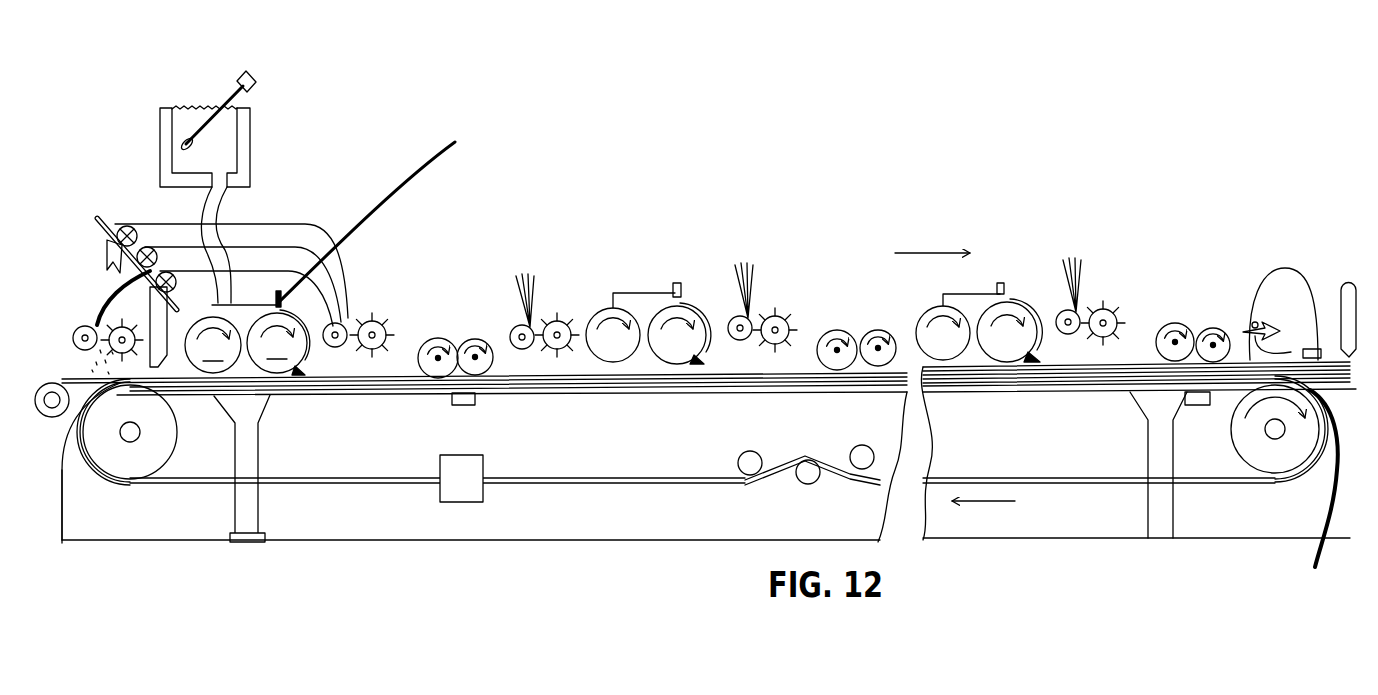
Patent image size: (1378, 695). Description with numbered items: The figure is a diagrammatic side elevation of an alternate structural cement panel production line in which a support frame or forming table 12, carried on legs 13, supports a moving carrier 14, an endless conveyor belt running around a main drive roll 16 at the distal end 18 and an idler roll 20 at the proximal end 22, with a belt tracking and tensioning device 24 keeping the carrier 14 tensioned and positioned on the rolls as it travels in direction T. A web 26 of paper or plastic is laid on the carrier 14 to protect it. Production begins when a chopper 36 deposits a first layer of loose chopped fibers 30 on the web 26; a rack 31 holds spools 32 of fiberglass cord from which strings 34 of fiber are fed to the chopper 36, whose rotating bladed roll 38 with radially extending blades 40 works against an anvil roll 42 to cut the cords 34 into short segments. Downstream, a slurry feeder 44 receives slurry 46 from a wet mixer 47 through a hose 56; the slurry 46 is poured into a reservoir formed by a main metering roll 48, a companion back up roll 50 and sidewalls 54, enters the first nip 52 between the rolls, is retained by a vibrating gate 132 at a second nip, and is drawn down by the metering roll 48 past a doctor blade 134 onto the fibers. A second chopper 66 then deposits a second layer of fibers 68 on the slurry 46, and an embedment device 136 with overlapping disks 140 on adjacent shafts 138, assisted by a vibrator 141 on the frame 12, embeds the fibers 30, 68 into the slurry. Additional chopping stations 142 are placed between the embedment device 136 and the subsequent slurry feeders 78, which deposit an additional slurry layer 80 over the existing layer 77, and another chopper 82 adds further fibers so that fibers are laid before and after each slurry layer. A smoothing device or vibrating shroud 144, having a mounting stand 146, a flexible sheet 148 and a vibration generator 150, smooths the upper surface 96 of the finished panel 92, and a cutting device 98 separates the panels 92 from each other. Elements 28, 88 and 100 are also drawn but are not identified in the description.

The support frame 12 is at (647, 393).
The legs 13 is at (250, 440).
The moving carrier 14 is at (172, 472).
The main drive roll 16 is at (1250, 450).
The distal end 18 is at (1315, 567).
The idler roll 20 is at (107, 445).
The proximal end 22 is at (62, 542).
The belt tracking and tensioning device 24 is at (835, 413).
The web 26 is at (64, 386).
The drive motor 28 is at (462, 503).
The chopped fibers 30 is at (66, 368).
The rack 31 is at (96, 216).
The spools 32 is at (122, 228).
The string of fiber 34 is at (82, 326).
The chopper 36 is at (97, 297).
The bladed roll 38 is at (378, 310).
The blades 40 is at (360, 316).
The anvil roll 42 is at (78, 345).
The slurry feeder 44 is at (343, 215).
The slurry 46 is at (228, 126).
The wet mixer 47 is at (167, 106).
The main metering roll 48 is at (278, 342).
The back up roll 50 is at (231, 339).
The first nip 52 is at (266, 292).
The sidewalls 54 is at (193, 252).
The hose 56 is at (228, 194).
The second chopper station 66 is at (378, 240).
The second layer of fibers 68 is at (331, 395).
The first layer 77 is at (520, 325).
The second slurry feeder 78 is at (643, 270).
The additional layer 80 is at (807, 372).
The additional chopper 82 is at (775, 273).
The brush roller 88 is at (1040, 358).
The panel 92 is at (1345, 394).
The upper surface 96 is at (1334, 360).
The cutting device 98 is at (1327, 360).
The apparatus 100 is at (770, 66).
The gate 132 is at (455, 142).
The doctor blade 134 is at (283, 393).
The embedment device 136 is at (460, 297).
The shafts 138 is at (435, 393).
The disks 140 is at (492, 377).
The vibrator 141 is at (862, 367).
The additional chopping stations 142 is at (537, 297).
The vibrating shroud 144 is at (1283, 312).
The mounting stand 146 is at (1242, 310).
The flexible sheet 148 is at (1282, 339).
The vibration generator 150 is at (1340, 305).
The direction of travel T is at (932, 248).